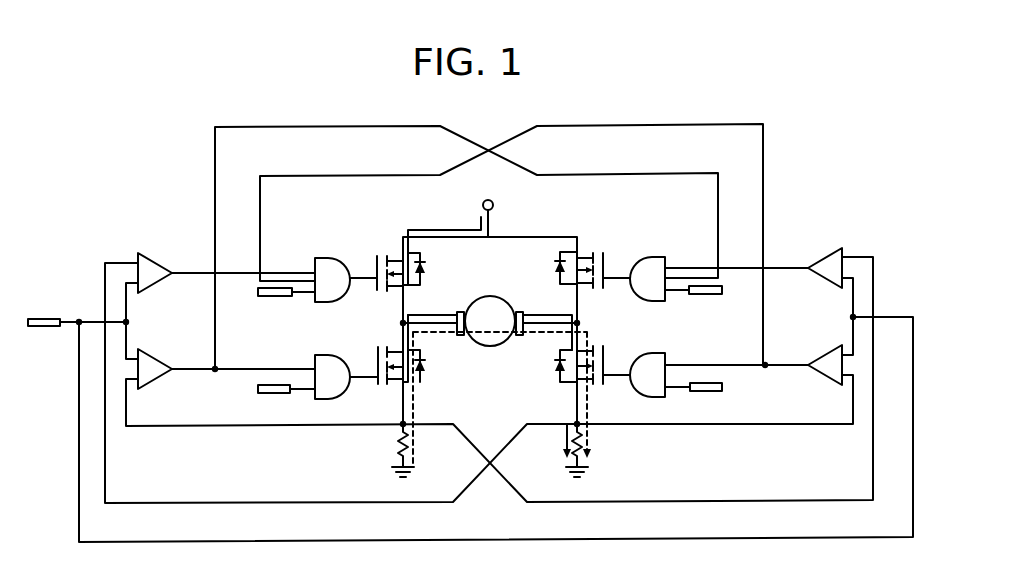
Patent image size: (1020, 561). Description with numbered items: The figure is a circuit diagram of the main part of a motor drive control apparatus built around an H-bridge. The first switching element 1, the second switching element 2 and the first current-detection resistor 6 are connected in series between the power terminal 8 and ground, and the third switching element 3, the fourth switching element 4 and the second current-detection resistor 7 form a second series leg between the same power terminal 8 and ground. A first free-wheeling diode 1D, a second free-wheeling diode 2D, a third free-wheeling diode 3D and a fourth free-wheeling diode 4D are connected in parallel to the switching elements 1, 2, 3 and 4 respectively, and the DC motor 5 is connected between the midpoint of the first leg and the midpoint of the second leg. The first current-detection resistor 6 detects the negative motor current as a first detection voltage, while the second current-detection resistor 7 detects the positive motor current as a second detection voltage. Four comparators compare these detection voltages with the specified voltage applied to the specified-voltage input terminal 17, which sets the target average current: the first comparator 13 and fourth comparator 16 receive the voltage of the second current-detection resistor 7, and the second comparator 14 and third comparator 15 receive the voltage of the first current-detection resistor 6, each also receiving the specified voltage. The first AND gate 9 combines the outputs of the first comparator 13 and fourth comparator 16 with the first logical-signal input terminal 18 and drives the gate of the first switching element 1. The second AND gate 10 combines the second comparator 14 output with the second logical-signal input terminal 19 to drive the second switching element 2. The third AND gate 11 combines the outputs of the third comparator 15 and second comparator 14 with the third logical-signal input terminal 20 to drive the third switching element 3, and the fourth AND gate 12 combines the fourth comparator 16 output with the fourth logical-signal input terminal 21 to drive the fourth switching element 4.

The first switching element 1 is at (390, 257).
The first free-wheeling diode 1D is at (424, 267).
The second switching element 2 is at (396, 351).
The second free-wheeling diode 2D is at (424, 369).
The third switching element 3 is at (595, 254).
The third free-wheeling diode 3D is at (556, 267).
The fourth switching element 4 is at (598, 350).
The fourth free-wheeling diode 4D is at (556, 369).
The DC motor 5 is at (490, 347).
The first current-detection resistor 6 is at (399, 438).
The second current-detection resistor 7 is at (591, 438).
The power terminal 8 is at (494, 206).
The first AND gate 9 is at (326, 257).
The second AND gate 10 is at (326, 354).
The third AND gate 11 is at (660, 257).
The fourth AND gate 12 is at (660, 353).
The first comparator 13 is at (160, 254).
The second comparator 14 is at (160, 351).
The third comparator 15 is at (838, 250).
The fourth comparator 16 is at (838, 347).
The specified-voltage input terminal 17 is at (42, 318).
The first logical-signal input terminal 18 is at (268, 297).
The second logical-signal input terminal 19 is at (258, 389).
The third logical-signal input terminal 20 is at (720, 296).
The fourth logical-signal input terminal 21 is at (723, 387).